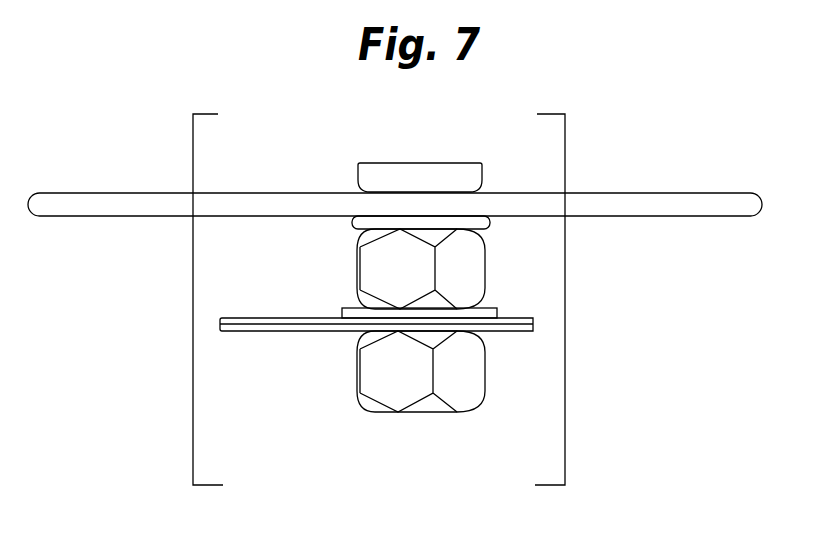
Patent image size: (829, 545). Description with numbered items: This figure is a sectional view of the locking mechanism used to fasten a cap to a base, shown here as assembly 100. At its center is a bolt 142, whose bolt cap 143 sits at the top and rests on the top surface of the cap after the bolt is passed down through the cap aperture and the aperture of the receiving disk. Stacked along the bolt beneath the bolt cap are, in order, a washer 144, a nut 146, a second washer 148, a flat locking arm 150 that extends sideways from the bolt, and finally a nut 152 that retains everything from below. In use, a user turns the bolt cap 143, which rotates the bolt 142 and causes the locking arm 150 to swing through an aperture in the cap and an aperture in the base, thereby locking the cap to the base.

The fastener assembly 100 is at (644, 353).
The bolt 142 is at (419, 158).
The bolt cap 143 is at (402, 176).
The washer 144 is at (368, 222).
The nut 146 is at (472, 258).
The washer 148 is at (480, 315).
The locking arm 150 is at (505, 331).
The nut 152 is at (458, 398).